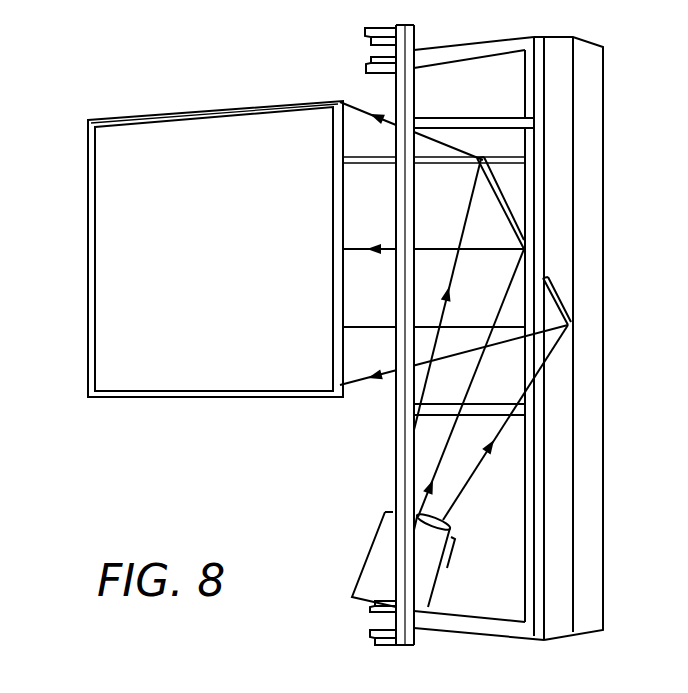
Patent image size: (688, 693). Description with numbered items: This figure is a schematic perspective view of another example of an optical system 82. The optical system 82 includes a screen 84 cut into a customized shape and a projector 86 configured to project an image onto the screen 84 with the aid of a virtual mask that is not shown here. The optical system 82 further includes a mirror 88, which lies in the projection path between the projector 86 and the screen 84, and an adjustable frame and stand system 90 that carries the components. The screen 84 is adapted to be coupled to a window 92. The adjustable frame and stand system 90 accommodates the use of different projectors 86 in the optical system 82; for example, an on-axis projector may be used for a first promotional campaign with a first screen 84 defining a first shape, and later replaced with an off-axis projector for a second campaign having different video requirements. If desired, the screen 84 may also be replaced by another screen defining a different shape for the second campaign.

The optical system 82 is at (186, 66).
The screen 84 is at (193, 398).
The projector 86 is at (428, 560).
The mirror 88 is at (489, 217).
The adjustable frame and stand system 90 is at (540, 540).
The window 92 is at (106, 177).